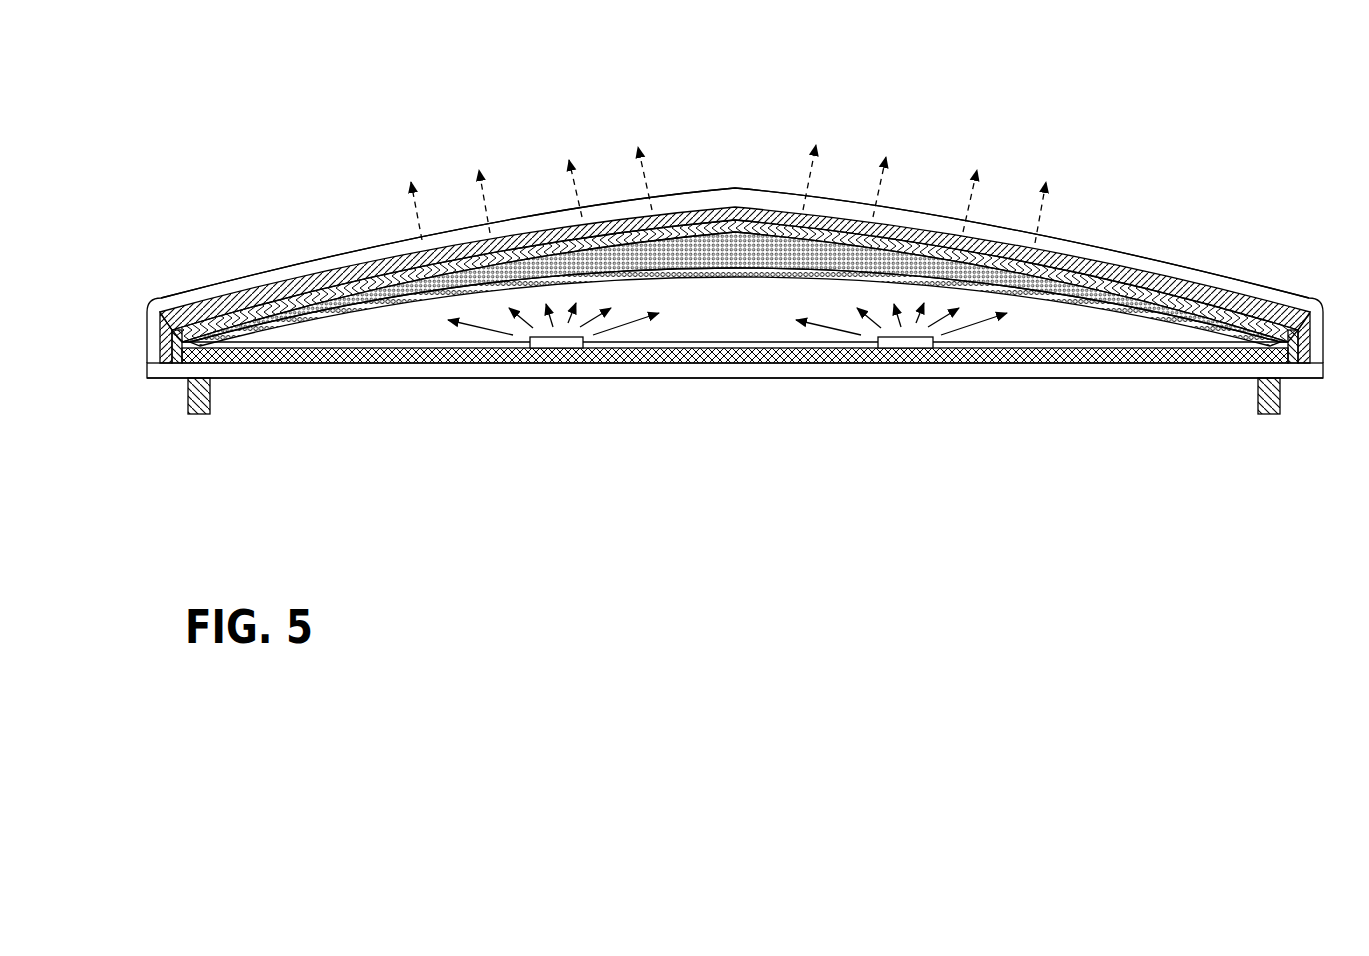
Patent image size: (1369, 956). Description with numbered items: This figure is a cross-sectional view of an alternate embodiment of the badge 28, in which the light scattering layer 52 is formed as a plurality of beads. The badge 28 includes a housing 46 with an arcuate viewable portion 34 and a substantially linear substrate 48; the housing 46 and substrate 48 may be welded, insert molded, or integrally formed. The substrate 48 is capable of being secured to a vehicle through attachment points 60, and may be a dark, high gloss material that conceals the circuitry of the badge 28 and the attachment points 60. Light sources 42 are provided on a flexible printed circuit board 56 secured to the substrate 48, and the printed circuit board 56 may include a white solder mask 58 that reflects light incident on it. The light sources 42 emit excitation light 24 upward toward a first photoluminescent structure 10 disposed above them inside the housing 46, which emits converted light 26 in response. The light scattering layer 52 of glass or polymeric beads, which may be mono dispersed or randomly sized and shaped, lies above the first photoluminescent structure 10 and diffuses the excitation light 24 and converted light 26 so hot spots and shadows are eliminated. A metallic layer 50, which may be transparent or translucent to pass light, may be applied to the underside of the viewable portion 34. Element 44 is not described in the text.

The badge 28 is at (266, 131).
The housing 46 is at (165, 290).
The converted light 26 is at (547, 237).
The viewable portion 34 is at (619, 207).
The diffuser layer 44 is at (823, 223).
The metallic layer 50 is at (915, 228).
The light scattering layer 52 is at (665, 237).
The first photoluminescent structure 10 is at (463, 257).
The white solder mask 58 is at (278, 345).
The flexible printed circuit board 56 is at (1102, 365).
The substrate 48 is at (1168, 380).
The attachment points 60 is at (203, 414).
The light sources 42 is at (550, 343).
The excitation light 24 is at (477, 328).